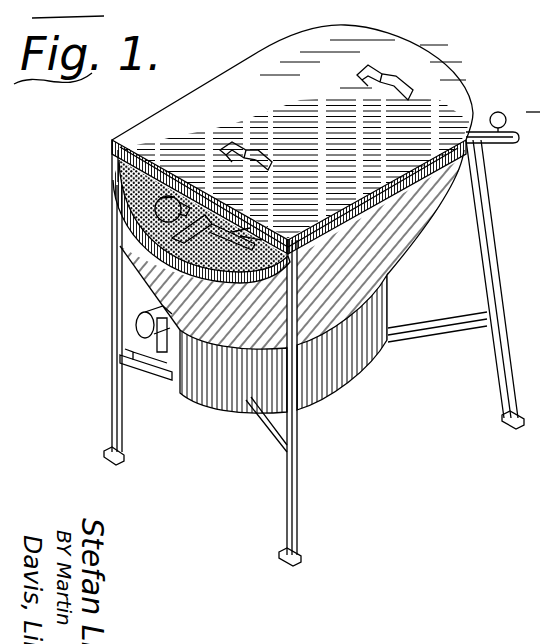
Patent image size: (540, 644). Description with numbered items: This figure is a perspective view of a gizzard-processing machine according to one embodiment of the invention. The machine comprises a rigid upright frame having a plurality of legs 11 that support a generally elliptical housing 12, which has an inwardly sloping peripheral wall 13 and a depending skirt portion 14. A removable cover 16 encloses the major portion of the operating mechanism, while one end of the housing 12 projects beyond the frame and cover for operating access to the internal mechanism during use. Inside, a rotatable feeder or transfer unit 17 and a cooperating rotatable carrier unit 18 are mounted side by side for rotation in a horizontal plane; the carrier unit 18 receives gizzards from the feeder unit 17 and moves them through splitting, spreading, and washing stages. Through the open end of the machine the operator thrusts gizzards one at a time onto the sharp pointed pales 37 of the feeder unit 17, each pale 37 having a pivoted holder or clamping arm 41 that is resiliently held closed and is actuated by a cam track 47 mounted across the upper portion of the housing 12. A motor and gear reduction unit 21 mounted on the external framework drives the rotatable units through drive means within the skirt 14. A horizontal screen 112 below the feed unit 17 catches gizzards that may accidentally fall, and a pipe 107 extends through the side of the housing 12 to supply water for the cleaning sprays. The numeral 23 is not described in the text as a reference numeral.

The legs 11 is at (287, 511).
The housing 12 is at (446, 212).
The inwardly sloping peripheral wall 13 is at (403, 247).
The depending skirt portion 14 is at (343, 350).
The removable cover 16 is at (392, 43).
The feeder or transfer unit 17 is at (145, 225).
The carrier unit 18 is at (533, 103).
The motor and gear reduction unit 21 is at (130, 335).
The right leg 23 is at (507, 372).
The pale or spike 37 is at (143, 266).
The holder or clamping arm 41 is at (205, 230).
The cam track 47 is at (178, 198).
The pipe 107 is at (490, 143).
The horizontal screen 112 is at (114, 190).